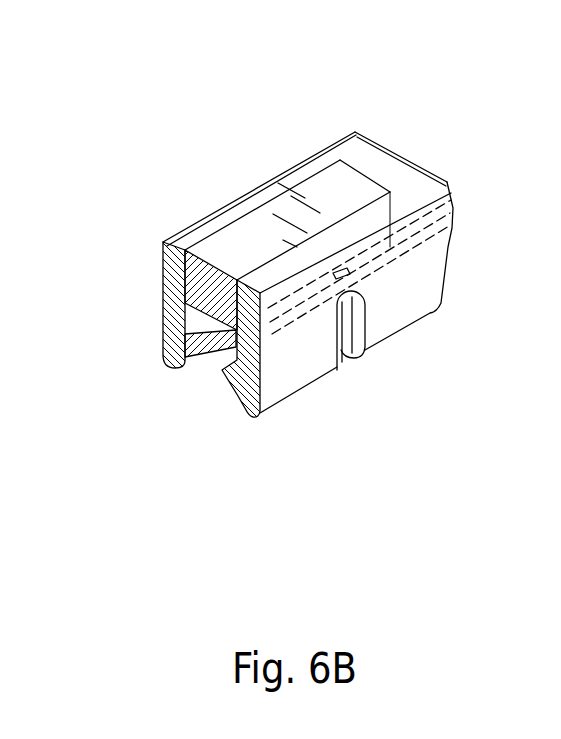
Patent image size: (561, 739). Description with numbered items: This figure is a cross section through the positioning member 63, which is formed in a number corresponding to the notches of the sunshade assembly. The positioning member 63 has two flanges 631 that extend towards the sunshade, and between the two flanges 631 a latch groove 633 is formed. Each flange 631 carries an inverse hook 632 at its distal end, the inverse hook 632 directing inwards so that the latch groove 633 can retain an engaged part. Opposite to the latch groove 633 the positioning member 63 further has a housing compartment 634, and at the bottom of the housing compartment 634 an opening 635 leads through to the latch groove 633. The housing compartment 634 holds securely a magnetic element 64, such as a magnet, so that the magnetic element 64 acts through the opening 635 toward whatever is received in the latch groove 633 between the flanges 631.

The positioning member 63 is at (387, 170).
The magnetic element 64 is at (252, 237).
The flange 631 is at (186, 333).
The inverse hook 632 is at (187, 350).
The latch groove 633 is at (198, 322).
The housing compartment 634 is at (363, 173).
The opening 635 is at (372, 282).